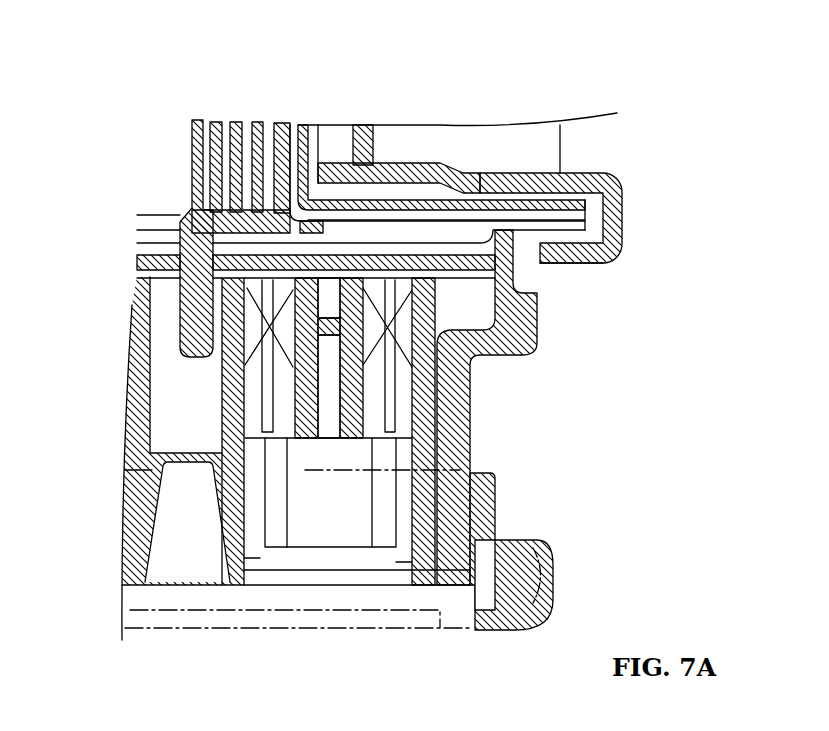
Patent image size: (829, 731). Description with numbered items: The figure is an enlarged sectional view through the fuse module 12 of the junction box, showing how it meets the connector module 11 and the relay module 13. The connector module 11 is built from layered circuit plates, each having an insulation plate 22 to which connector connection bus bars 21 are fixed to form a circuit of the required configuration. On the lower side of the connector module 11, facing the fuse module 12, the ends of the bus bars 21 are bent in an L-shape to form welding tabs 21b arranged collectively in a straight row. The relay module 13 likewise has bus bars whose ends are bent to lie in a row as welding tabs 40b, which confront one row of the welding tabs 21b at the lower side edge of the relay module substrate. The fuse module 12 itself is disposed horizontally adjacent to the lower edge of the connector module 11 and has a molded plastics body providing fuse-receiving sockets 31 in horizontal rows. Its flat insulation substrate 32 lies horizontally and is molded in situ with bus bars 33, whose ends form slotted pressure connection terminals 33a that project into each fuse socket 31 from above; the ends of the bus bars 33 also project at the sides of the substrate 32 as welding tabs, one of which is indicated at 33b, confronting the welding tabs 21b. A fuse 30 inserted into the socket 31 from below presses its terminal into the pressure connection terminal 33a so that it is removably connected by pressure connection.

The connector module 11 is at (228, 122).
The insulation plate 22 is at (277, 125).
The connector connection bus bar 21 is at (293, 134).
The welding tab 21b is at (577, 222).
The relay module 13 is at (308, 126).
The welding tab 40b is at (572, 207).
The stator core end 33b is at (612, 263).
The insulation substrate 32 is at (537, 313).
The bus bar 33 is at (517, 357).
The pressure connection terminal 33a is at (385, 415).
The fuse-receiving socket 31 is at (263, 500).
The fuse 30 is at (337, 540).
The fuse module 12 is at (397, 597).